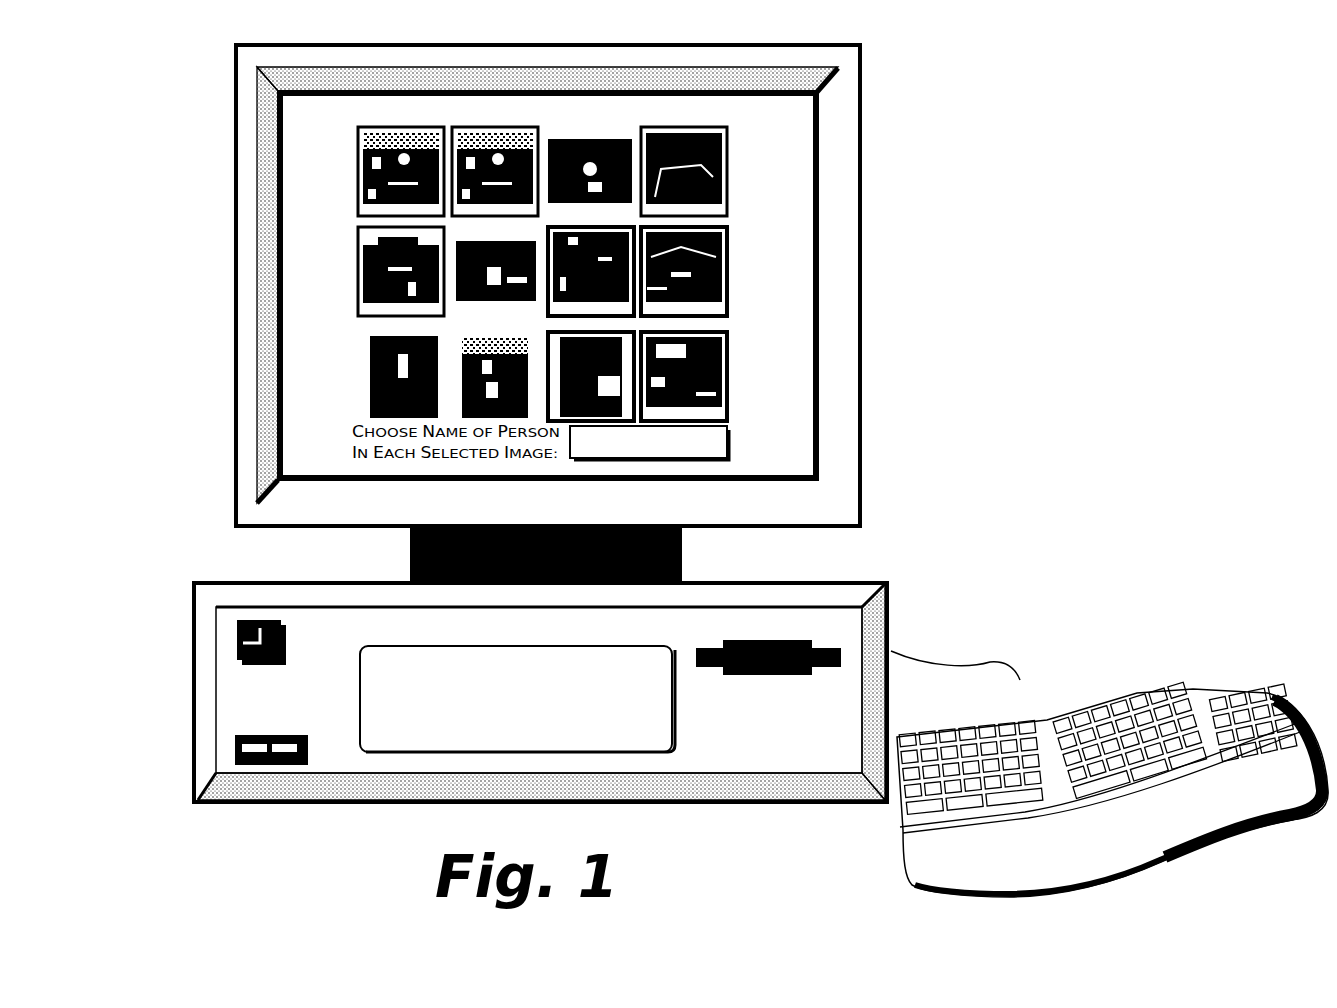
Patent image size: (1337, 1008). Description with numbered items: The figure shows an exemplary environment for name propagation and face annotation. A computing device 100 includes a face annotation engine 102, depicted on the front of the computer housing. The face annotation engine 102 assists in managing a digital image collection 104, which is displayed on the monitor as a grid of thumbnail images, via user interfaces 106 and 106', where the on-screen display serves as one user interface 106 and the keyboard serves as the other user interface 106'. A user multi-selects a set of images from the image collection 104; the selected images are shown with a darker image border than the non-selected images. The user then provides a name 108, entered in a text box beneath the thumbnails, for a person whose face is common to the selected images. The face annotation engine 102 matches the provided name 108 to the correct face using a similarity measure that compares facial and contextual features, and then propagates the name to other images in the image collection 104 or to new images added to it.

The computing device 100 is at (590, 423).
The face annotation engine 102 is at (517, 699).
The digital image collection 104 is at (687, 121).
The user interface 106 is at (670, 274).
The user interface 106' is at (1109, 758).
The name 108 is at (776, 415).